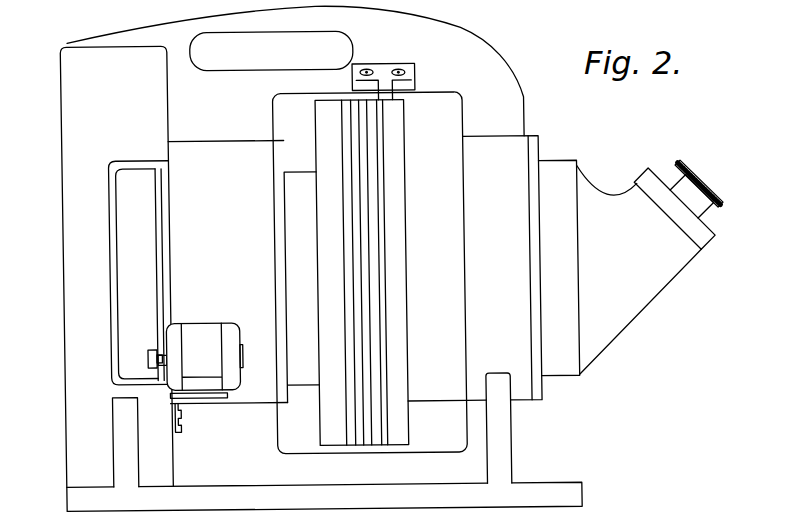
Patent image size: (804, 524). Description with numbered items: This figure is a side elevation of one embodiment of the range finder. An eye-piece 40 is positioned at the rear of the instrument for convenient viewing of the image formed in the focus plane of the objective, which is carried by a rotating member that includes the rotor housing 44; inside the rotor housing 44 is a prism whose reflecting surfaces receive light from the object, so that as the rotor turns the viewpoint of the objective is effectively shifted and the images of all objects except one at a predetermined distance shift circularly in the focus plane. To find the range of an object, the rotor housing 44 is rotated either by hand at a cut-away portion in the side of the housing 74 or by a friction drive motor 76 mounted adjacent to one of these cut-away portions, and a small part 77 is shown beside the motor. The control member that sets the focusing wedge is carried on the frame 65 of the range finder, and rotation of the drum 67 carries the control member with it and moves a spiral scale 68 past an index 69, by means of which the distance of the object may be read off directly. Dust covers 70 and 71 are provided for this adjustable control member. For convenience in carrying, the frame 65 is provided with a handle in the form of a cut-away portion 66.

The eye-piece 40 is at (709, 199).
The rotor housing 44 is at (139, 273).
The frame 65 is at (492, 60).
The cut-away portion 66 is at (288, 36).
The drum 67 is at (397, 317).
The spiral scale 68 is at (378, 172).
The index 69 is at (397, 99).
The dust cover 70 is at (369, 273).
The dust cover 71 is at (301, 287).
The housing 74 is at (68, 108).
The friction drive motor 76 is at (193, 332).
The switch 77 is at (147, 350).